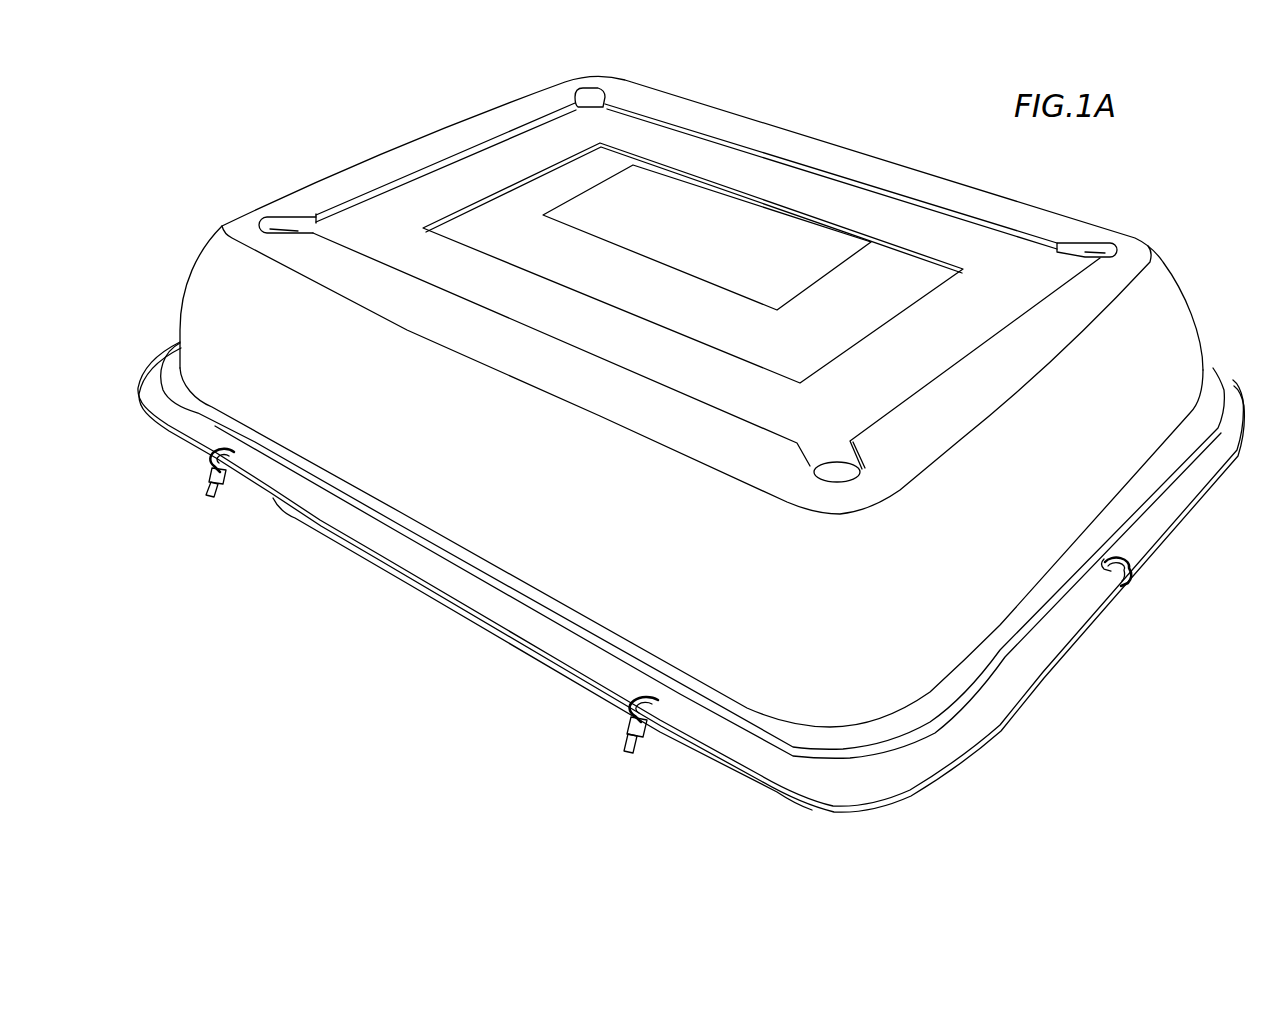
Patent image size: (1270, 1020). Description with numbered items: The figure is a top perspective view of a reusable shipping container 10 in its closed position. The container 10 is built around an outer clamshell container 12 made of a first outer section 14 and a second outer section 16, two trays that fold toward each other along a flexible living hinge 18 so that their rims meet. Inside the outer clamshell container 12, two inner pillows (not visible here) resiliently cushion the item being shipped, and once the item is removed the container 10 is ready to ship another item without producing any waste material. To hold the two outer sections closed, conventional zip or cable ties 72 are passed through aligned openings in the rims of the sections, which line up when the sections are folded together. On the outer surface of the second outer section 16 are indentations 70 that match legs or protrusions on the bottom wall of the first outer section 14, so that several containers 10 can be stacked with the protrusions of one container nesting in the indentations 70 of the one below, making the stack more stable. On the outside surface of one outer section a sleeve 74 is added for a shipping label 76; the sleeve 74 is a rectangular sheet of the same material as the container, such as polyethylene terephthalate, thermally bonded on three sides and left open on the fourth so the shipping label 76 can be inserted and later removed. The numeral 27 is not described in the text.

The reusable shipping container 10 is at (350, 644).
The outer clamshell container 12 is at (1077, 647).
The first outer section 14 is at (827, 813).
The second outer section 16 is at (384, 152).
The flexible living hinge 18 is at (1213, 370).
The clip 27 is at (1133, 570).
The indentations 70 is at (587, 93).
The zip or cable ties 72 is at (215, 492).
The sleeve 74 is at (863, 302).
The shipping label 76 is at (801, 257).